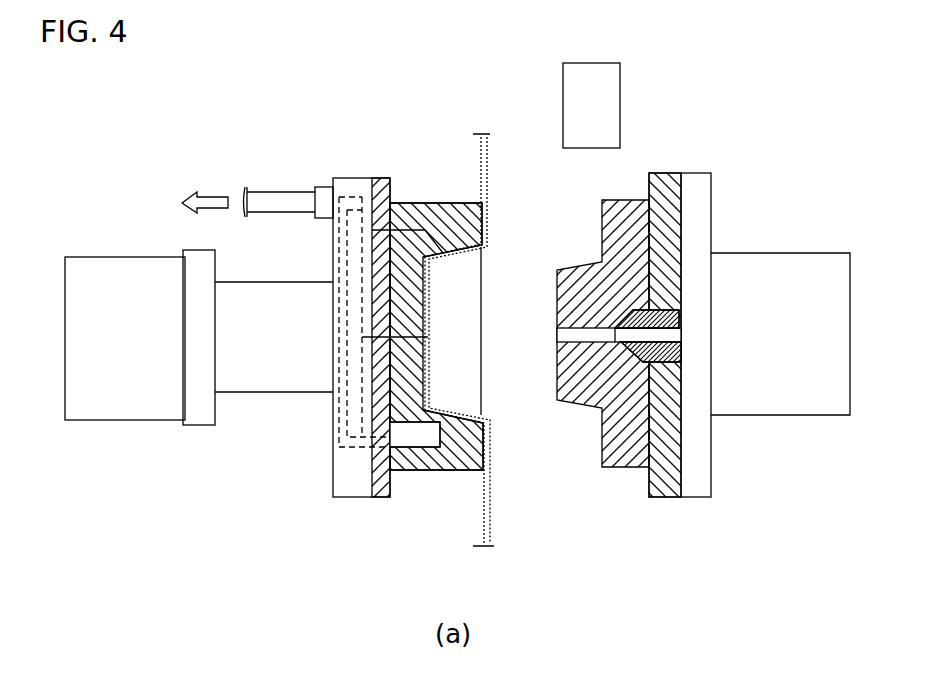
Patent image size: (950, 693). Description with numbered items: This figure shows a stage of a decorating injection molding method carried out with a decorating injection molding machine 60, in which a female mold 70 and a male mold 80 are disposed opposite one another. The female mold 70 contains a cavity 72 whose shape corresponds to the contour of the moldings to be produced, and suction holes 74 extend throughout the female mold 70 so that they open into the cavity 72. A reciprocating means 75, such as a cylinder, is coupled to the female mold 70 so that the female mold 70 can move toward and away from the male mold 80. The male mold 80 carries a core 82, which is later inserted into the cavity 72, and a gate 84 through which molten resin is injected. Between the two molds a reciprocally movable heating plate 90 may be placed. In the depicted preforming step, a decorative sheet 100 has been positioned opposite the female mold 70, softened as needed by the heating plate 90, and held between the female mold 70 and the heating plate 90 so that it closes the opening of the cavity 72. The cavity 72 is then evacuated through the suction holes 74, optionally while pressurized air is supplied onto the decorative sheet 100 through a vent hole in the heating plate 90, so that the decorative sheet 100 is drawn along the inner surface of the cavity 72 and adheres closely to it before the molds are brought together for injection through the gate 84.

The decorating injection molding machine 60 is at (671, 310).
The female mold 70 is at (437, 471).
The cavity 72 is at (456, 285).
The suction holes 74 is at (398, 200).
The reciprocating means 75 is at (123, 425).
The male mold 80 is at (622, 468).
The core 82 is at (573, 407).
The gate 84 is at (608, 340).
The heating plate 90 is at (578, 91).
The decorative sheet 100 is at (412, 376).